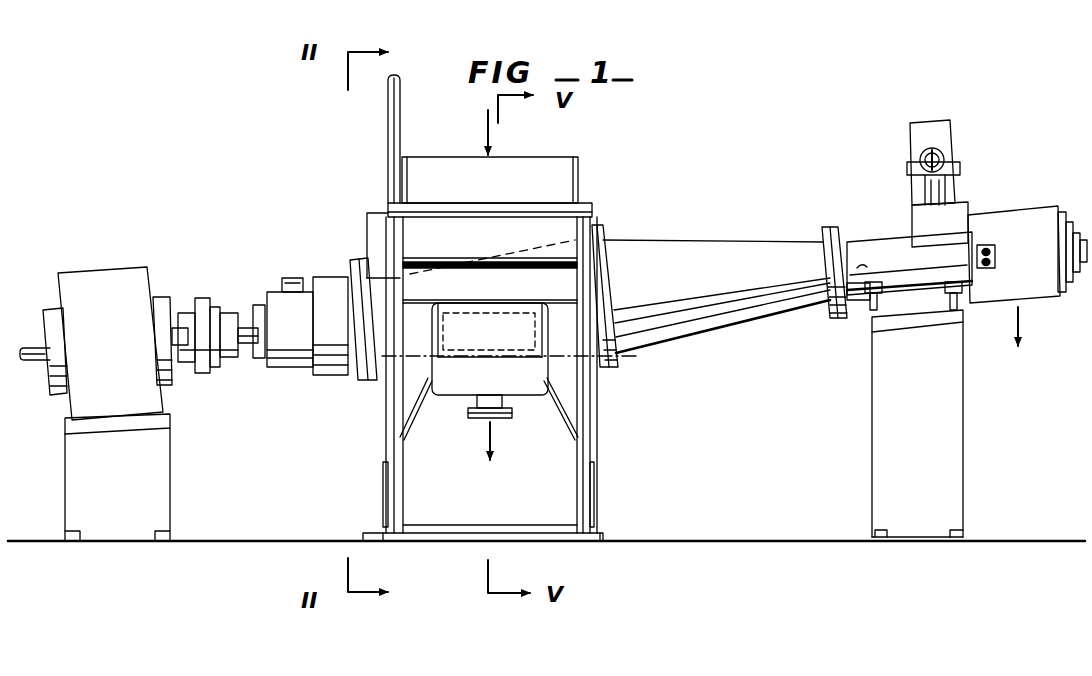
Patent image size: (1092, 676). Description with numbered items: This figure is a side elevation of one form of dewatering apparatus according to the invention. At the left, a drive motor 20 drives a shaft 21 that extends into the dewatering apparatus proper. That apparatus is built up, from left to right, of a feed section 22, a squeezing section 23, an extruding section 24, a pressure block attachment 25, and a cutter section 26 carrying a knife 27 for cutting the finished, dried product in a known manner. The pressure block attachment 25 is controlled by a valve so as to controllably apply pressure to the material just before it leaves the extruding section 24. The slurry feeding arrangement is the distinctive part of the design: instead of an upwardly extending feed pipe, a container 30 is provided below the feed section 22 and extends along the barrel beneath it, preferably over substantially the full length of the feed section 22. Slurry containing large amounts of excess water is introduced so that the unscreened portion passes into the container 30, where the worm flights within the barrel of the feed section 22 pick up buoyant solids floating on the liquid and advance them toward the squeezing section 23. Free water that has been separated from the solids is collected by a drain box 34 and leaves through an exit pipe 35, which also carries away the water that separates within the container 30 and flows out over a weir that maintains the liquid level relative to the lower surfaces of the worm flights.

The drive motor 20 is at (123, 280).
The shaft 21 is at (242, 327).
The feed section 22 is at (573, 232).
The squeezing section 23 is at (817, 236).
The extruding section 24 is at (967, 263).
The pressure block attachment 25 is at (952, 225).
The cutter section 26 is at (1027, 276).
The knife 27 is at (987, 245).
The container 30 is at (501, 308).
The drain box 34 is at (490, 333).
The exit pipe 35 is at (500, 408).